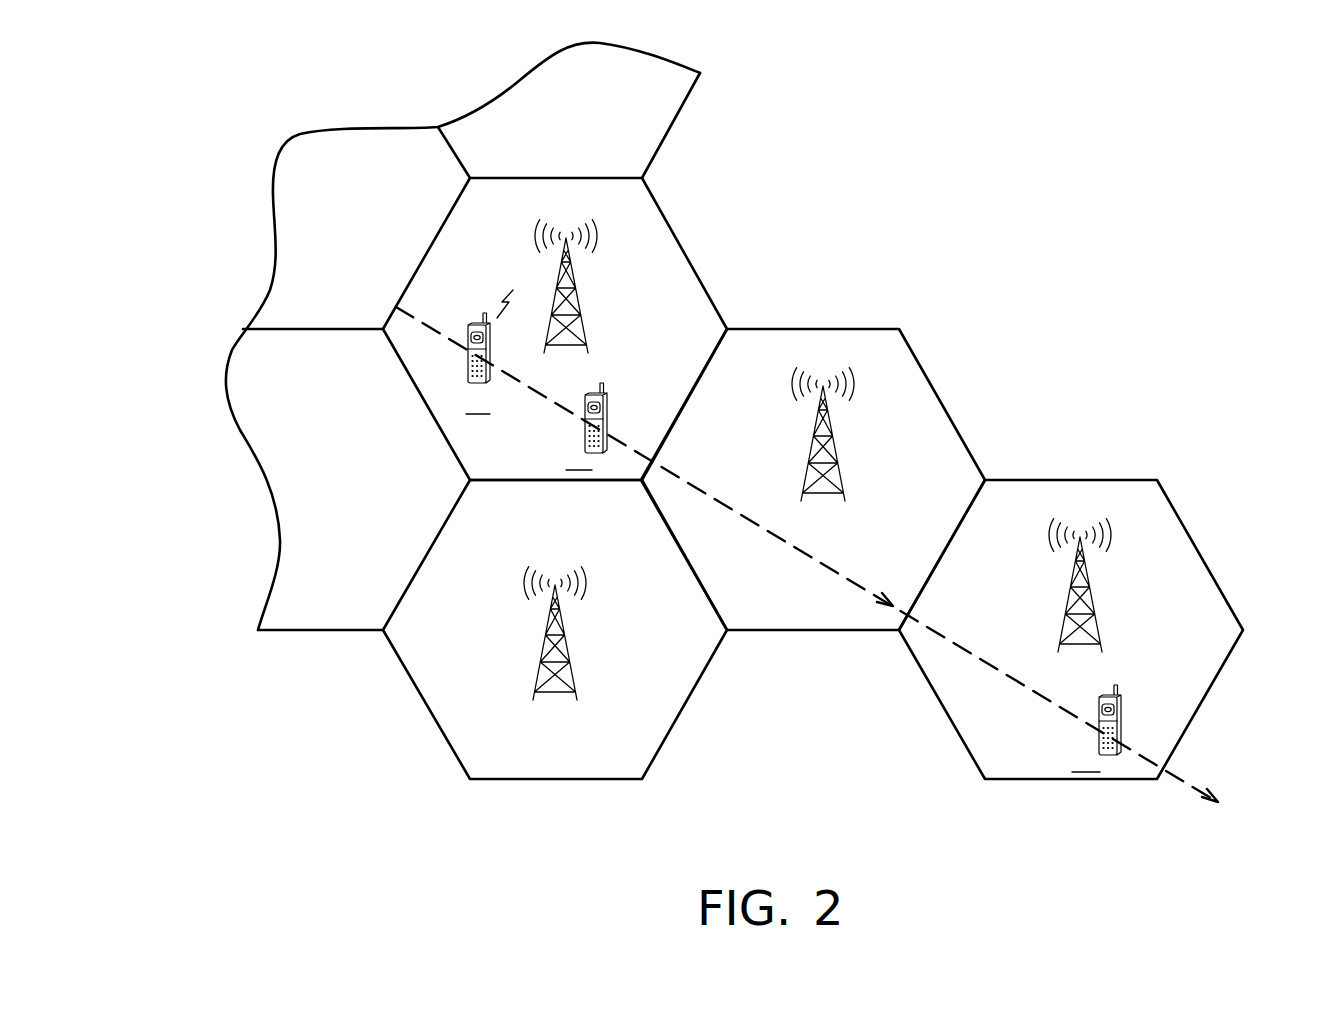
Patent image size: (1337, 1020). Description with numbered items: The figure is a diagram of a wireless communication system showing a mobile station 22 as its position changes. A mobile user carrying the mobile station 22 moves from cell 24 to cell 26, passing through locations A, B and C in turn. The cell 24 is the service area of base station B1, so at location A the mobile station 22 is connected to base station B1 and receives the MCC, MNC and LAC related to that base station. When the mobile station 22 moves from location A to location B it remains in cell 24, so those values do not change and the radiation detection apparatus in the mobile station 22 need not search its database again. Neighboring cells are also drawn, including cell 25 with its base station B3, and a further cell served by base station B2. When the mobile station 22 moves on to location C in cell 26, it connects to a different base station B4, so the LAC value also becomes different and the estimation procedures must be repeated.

The mobile station 22 is at (466, 346).
The cell 24 is at (436, 237).
The cell 25 is at (917, 362).
The cell 26 is at (1172, 505).
The base station B1 is at (582, 332).
The base station B2 is at (537, 690).
The base station B3 is at (840, 478).
The base station B4 is at (1093, 630).